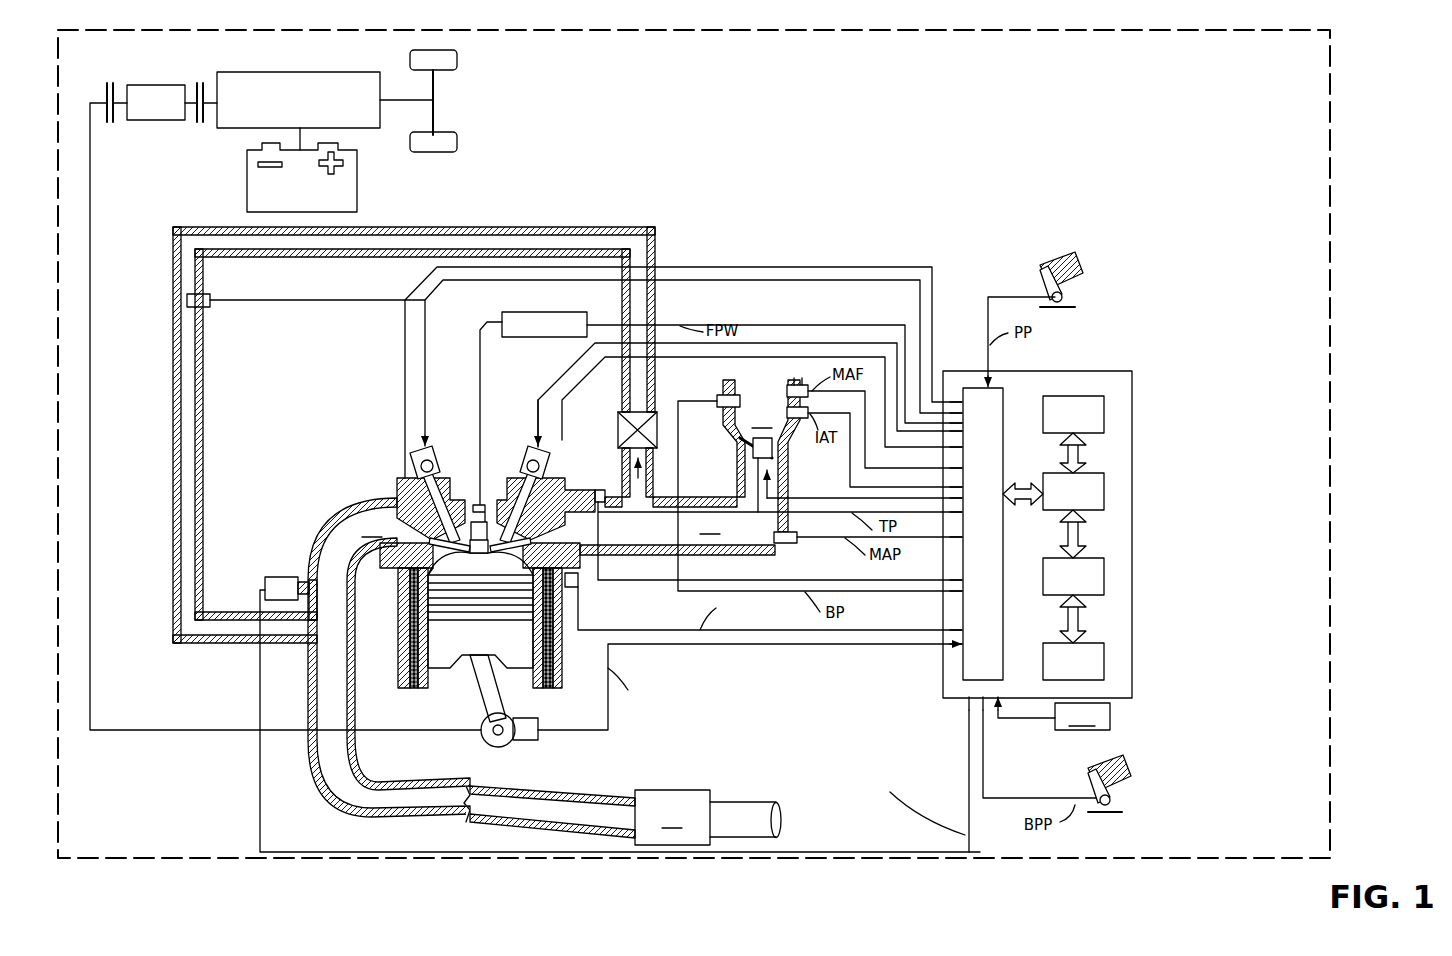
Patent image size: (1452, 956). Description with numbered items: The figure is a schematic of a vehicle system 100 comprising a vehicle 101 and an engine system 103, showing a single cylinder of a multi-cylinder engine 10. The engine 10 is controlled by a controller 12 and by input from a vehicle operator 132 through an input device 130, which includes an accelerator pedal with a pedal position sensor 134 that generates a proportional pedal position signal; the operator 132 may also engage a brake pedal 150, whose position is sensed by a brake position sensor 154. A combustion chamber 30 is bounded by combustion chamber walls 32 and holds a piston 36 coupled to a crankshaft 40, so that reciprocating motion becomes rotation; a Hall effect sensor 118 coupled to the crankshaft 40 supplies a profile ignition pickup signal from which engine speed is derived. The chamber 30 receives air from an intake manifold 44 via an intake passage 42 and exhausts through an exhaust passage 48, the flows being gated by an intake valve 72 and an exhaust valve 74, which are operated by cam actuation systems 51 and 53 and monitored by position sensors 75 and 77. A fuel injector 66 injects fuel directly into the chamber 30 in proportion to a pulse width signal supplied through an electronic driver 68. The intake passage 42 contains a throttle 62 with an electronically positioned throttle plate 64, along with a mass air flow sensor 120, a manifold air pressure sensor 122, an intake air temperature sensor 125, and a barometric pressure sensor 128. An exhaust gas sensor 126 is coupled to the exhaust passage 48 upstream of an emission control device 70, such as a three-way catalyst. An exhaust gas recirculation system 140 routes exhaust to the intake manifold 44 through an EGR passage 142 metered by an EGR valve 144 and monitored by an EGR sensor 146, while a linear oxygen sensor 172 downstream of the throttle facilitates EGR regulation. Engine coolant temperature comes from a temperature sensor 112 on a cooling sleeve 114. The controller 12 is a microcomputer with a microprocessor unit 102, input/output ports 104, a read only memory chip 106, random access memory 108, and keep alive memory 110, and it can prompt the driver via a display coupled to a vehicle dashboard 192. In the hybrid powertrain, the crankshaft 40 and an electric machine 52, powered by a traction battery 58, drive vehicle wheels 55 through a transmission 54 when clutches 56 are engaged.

The engine 10 is at (343, 440).
The controller 12 is at (1068, 523).
The combustion chamber 30 is at (402, 645).
The combustion chamber walls 32 is at (426, 690).
The piston 36 is at (470, 665).
The crankshaft 40 is at (488, 747).
The intake passage 42 is at (761, 456).
The intake manifold 44 is at (677, 526).
The exhaust passage 48 is at (389, 657).
The cam actuation system 51 is at (531, 447).
The electric machine 52 is at (165, 120).
The cam actuation system 53 is at (432, 446).
The transmission 54 is at (358, 128).
The vehicle wheels 55 is at (440, 152).
The clutch 56 is at (106, 88).
The traction battery 58 is at (357, 192).
The throttle 62 is at (788, 445).
The throttle plate 64 is at (752, 450).
The fuel injector 66 is at (481, 505).
The electronic driver 68 is at (562, 340).
The emission control device 70 is at (622, 815).
The intake valve 72 is at (535, 540).
The exhaust valve 74 is at (440, 538).
The position sensor 75 is at (550, 472).
The position sensor 77 is at (410, 462).
The vehicle system 100 is at (1208, 228).
The vehicle 101 is at (1338, 500).
The microprocessor unit 102 is at (1104, 492).
The engine system 103 is at (867, 240).
The input/output ports 104 is at (1006, 400).
The read only memory chip 106 is at (1104, 410).
The random access memory 108 is at (1104, 577).
The keep alive memory 110 is at (1104, 660).
The temperature sensor 112 is at (578, 582).
The cooling sleeve 114 is at (560, 648).
The Hall effect sensor 118 is at (538, 740).
The mass air flow sensor 120 is at (788, 388).
The manifold air pressure sensor 122 is at (795, 543).
The intake air temperature sensor 125 is at (787, 412).
The exhaust gas sensor 126 is at (265, 583).
The barometric pressure sensor 128 is at (717, 400).
The input device 130 is at (1101, 513).
The vehicle operator 132 is at (1085, 264).
The pedal position sensor 134 is at (1075, 302).
The exhaust gas recirculation system 140 is at (532, 226).
The EGR passage 142 is at (404, 227).
The EGR valve 144 is at (618, 432).
The EGR sensor 146 is at (205, 307).
The brake pedal 150 is at (1133, 785).
The brake position sensor 154 is at (1122, 806).
The linear oxygen sensor 172 is at (605, 500).
The vehicle dashboard 192 is at (1082, 716).